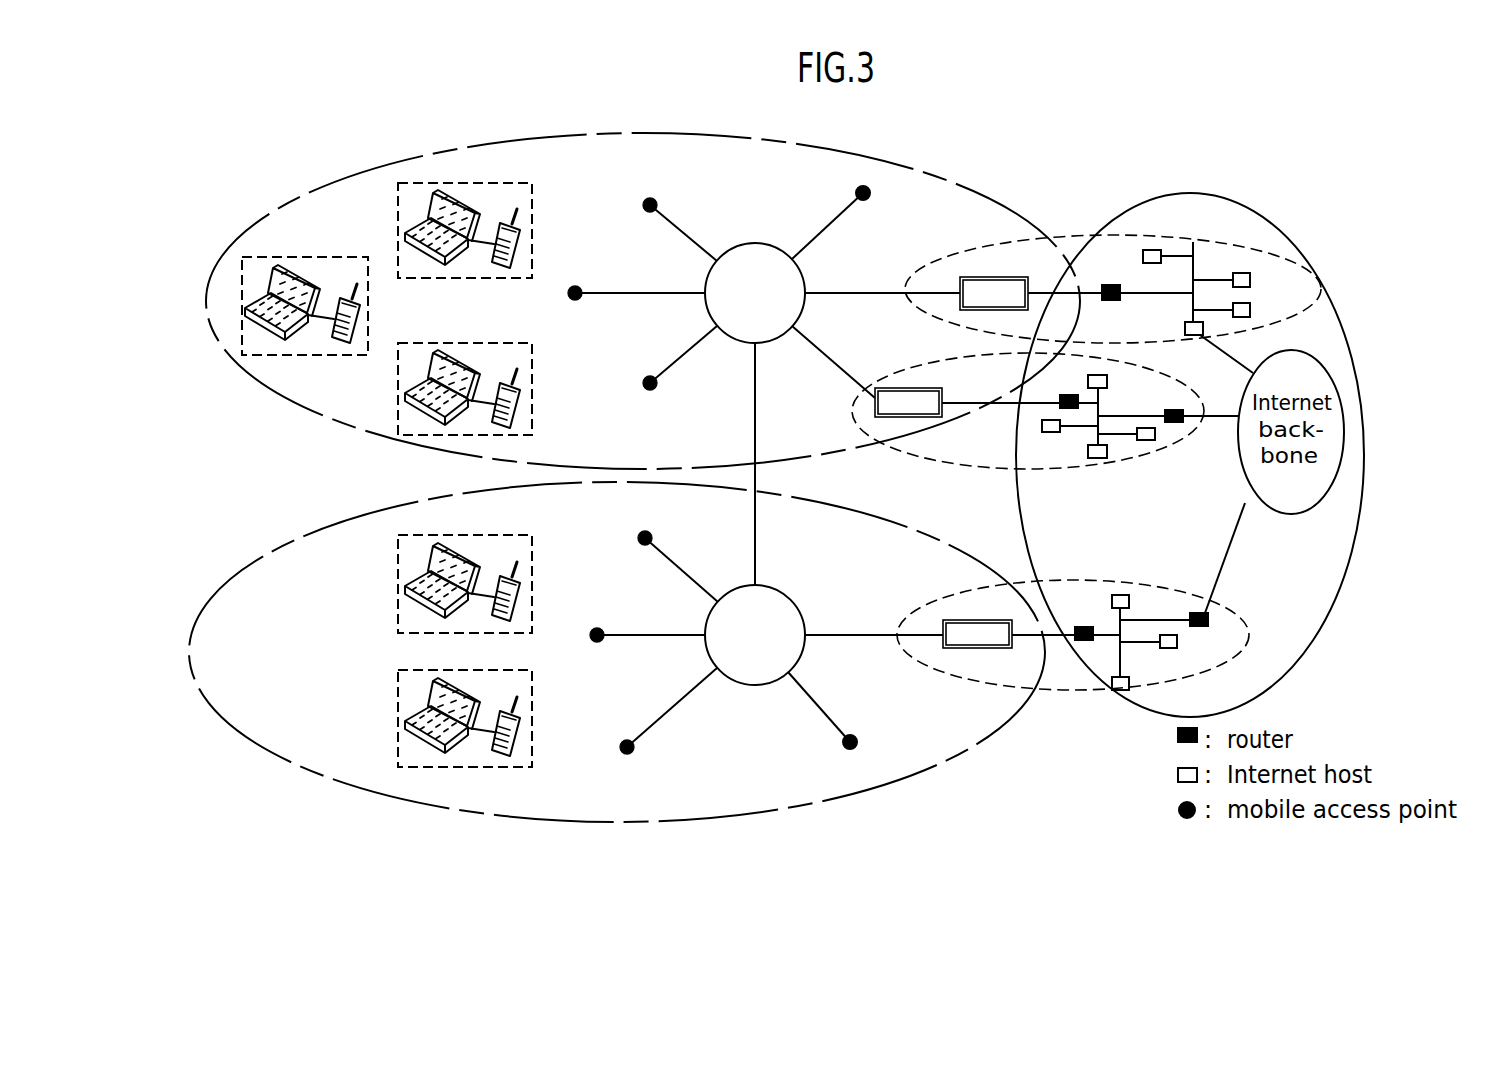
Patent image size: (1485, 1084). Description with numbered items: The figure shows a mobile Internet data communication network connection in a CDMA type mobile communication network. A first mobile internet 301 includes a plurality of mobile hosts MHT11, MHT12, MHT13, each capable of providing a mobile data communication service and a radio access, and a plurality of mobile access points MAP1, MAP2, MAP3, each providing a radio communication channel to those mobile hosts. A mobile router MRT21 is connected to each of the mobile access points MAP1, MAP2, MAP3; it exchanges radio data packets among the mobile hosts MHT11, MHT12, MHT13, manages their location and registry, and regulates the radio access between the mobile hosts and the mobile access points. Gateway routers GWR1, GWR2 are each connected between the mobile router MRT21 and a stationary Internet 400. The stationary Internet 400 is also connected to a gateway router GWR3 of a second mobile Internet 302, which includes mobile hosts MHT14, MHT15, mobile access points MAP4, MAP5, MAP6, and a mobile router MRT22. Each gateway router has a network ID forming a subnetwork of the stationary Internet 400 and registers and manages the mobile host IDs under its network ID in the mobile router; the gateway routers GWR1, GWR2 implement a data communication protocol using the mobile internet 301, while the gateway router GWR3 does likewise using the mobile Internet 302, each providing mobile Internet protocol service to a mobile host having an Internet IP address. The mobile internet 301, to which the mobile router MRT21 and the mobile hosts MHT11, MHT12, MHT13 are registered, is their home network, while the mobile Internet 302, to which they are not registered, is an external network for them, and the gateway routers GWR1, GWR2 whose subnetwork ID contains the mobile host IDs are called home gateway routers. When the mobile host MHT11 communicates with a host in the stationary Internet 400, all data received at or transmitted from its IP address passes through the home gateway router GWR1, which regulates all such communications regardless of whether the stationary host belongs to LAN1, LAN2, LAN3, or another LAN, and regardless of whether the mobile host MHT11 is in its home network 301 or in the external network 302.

The mobile internet 301 is at (958, 180).
The mobile Internet 302 is at (970, 738).
The stationary Internet 400 is at (1172, 193).
The mobile host MHT11 is at (368, 312).
The mobile host MHT12 is at (533, 197).
The mobile host MHT13 is at (532, 405).
The mobile host MHT14 is at (405, 566).
The mobile host MHT15 is at (405, 701).
The mobile access point MAP1 is at (647, 207).
The mobile access point MAP2 is at (575, 300).
The mobile access point MAP3 is at (652, 390).
The mobile access point MAP4 is at (643, 546).
The mobile access point MAP5 is at (597, 642).
The mobile access point MAP6 is at (630, 753).
The mobile router MRT21 is at (755, 243).
The mobile router MRT22 is at (833, 577).
The gateway router GWR1 is at (1113, 289).
The gateway router GWR2 is at (1028, 411).
The gateway router GWR3 is at (1073, 635).
The LAN LAN1 is at (1140, 307).
The LAN LAN2 is at (1090, 419).
The LAN LAN3 is at (1128, 596).